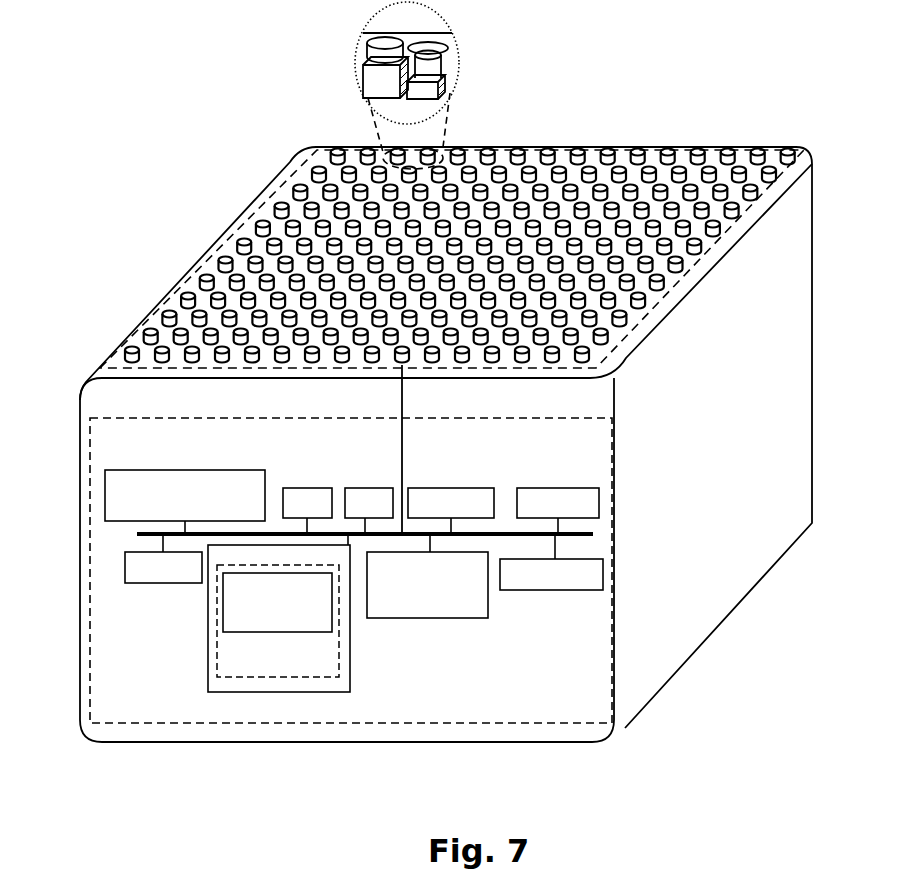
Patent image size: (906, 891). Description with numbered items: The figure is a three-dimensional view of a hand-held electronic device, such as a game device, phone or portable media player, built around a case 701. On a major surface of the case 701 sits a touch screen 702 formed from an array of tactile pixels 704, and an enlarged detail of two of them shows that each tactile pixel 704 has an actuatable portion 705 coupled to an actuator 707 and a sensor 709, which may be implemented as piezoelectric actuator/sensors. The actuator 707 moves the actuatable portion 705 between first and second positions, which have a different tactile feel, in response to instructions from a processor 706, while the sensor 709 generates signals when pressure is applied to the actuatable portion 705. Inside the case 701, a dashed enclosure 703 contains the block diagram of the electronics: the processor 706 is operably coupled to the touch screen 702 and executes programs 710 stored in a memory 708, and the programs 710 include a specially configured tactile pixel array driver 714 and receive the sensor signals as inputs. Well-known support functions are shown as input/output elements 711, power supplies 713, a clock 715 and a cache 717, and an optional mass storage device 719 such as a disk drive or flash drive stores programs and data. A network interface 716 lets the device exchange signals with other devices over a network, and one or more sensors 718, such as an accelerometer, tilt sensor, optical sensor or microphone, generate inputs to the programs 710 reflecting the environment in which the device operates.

The case 701 is at (228, 213).
The touch screen 702 is at (187, 283).
The control electronics enclosure 703 is at (90, 447).
The tactile pixels 704 is at (460, 268).
The actuatable portion 705 is at (372, 42).
The actuator 707 is at (370, 78).
The sensor 709 is at (372, 97).
The processor 706 is at (165, 583).
The memory 708 is at (277, 622).
The programs 710 is at (350, 640).
The input/output (I/O) elements 711 is at (307, 488).
The power supplies (P/S) 713 is at (362, 488).
The tactile pixel array driver 714 is at (223, 622).
The clock (CLK) 715 is at (463, 488).
The network interface 716 is at (109, 505).
The cache 717 is at (550, 488).
The sensors 718 is at (555, 590).
The mass storage device 719 is at (475, 618).